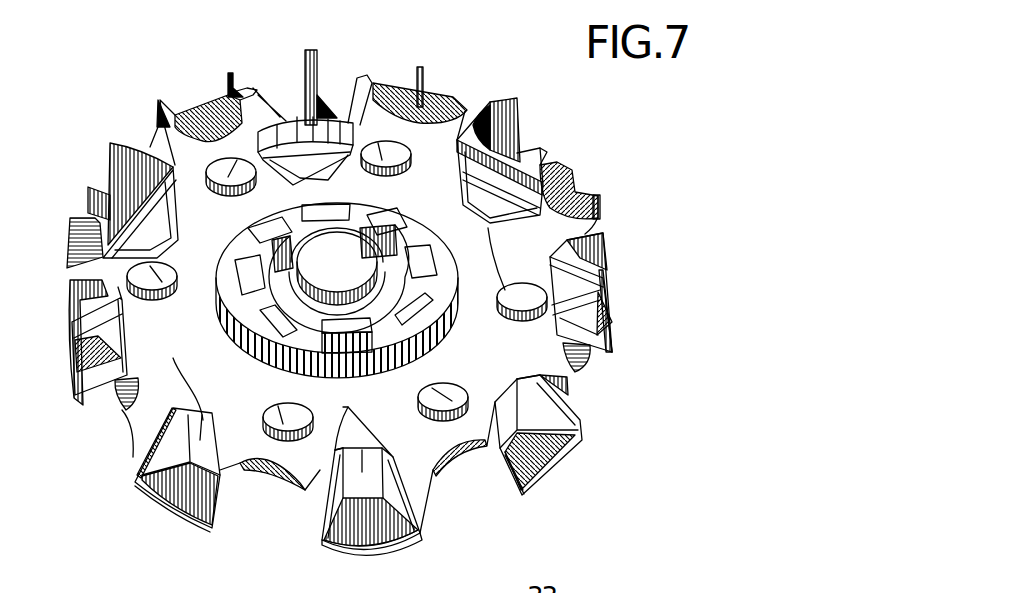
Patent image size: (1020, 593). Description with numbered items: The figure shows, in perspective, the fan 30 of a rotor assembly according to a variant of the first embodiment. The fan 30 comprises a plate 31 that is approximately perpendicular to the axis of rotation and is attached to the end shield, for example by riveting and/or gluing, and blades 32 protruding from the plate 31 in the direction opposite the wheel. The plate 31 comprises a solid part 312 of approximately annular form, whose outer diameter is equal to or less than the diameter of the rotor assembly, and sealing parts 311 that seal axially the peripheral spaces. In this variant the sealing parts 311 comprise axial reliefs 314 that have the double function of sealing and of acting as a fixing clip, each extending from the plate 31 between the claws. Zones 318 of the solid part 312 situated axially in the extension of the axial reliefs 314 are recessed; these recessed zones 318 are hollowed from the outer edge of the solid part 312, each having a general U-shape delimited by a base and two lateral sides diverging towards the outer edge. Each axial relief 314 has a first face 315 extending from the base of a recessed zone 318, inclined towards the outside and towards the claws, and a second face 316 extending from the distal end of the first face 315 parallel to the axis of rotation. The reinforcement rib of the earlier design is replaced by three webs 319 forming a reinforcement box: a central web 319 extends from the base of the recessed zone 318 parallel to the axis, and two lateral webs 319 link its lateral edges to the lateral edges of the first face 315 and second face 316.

The fan 30 is at (640, 200).
The plate 31 is at (462, 98).
The blades 32 is at (134, 160).
The sealing parts 311 is at (130, 457).
The solid part 312 is at (427, 177).
The axial relief 314 is at (625, 281).
The first face 315 is at (572, 390).
The second face 316 is at (567, 467).
The recessed zones 318 is at (572, 390).
The webs 319 is at (360, 473).